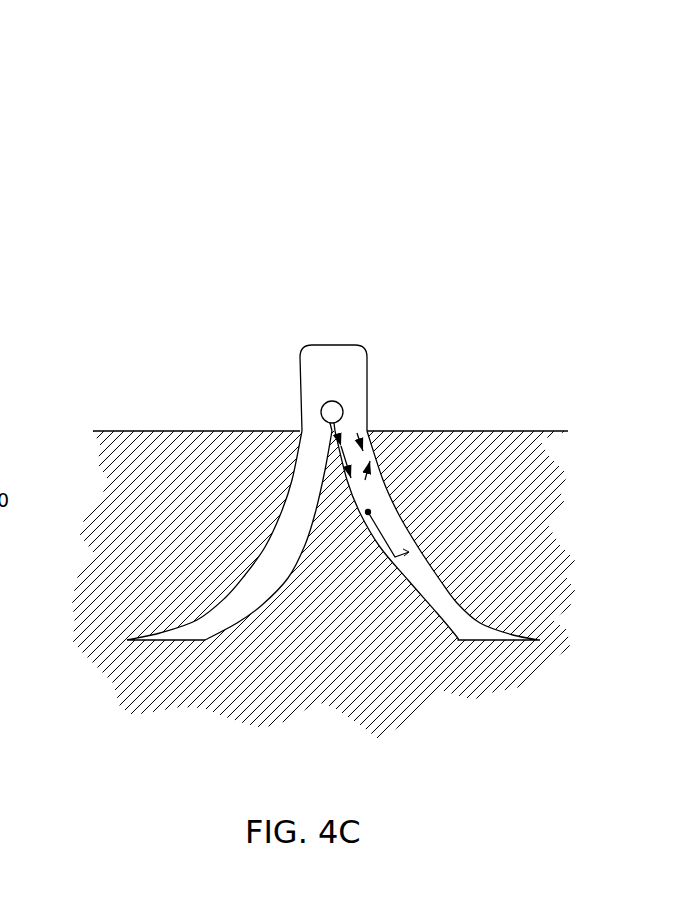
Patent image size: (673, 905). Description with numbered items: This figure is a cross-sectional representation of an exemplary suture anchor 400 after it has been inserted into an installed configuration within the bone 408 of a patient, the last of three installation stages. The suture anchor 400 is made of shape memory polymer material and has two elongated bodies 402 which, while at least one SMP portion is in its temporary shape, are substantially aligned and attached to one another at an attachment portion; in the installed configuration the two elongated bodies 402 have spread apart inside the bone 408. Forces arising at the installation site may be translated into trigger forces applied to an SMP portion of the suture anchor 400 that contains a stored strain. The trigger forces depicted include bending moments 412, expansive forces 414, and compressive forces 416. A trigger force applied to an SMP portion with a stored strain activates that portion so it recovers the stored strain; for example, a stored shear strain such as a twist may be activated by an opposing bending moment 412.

The suture anchor 400 is at (323, 454).
The elongated body 402 is at (257, 572).
The bone 408 is at (393, 683).
The bending moment 412 is at (395, 533).
The expansive force 414 is at (336, 460).
The compressive force 416 is at (368, 458).